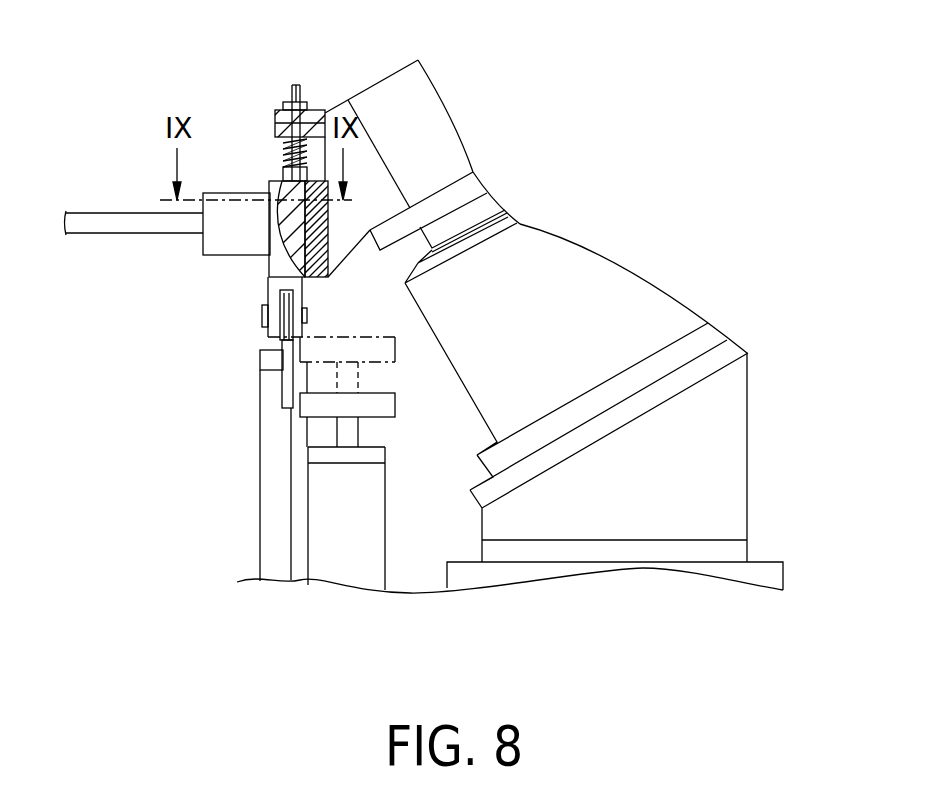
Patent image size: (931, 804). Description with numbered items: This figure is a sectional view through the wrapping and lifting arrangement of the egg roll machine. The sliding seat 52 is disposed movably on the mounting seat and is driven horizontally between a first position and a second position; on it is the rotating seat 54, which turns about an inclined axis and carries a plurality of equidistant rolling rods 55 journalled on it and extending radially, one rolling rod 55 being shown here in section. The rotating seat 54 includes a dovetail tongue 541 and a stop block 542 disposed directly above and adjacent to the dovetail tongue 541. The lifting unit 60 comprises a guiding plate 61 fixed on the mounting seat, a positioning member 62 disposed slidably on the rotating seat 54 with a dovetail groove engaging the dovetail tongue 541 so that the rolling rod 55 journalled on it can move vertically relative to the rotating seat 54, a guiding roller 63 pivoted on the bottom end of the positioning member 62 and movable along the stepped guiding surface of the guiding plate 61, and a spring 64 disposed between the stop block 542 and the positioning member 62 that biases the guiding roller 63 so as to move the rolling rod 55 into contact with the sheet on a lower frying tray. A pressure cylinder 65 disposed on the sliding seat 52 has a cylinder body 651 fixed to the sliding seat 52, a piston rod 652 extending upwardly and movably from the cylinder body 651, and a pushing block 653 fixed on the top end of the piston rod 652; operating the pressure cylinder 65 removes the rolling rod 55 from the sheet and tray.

The sliding seat 52 is at (708, 457).
The rotating seat 54 is at (439, 172).
The dovetail tongue 541 is at (330, 220).
The stop block 542 is at (317, 110).
The rolling rod 55 is at (97, 218).
The lifting unit 60 is at (276, 98).
The guiding plate 61 is at (287, 393).
The positioning member 62 is at (278, 245).
The guiding roller 63 is at (282, 313).
The spring 64 is at (287, 153).
The pressure cylinder 65 is at (277, 559).
The cylinder body 651 is at (348, 562).
The piston rod 652 is at (343, 433).
The pushing block 653 is at (313, 352).